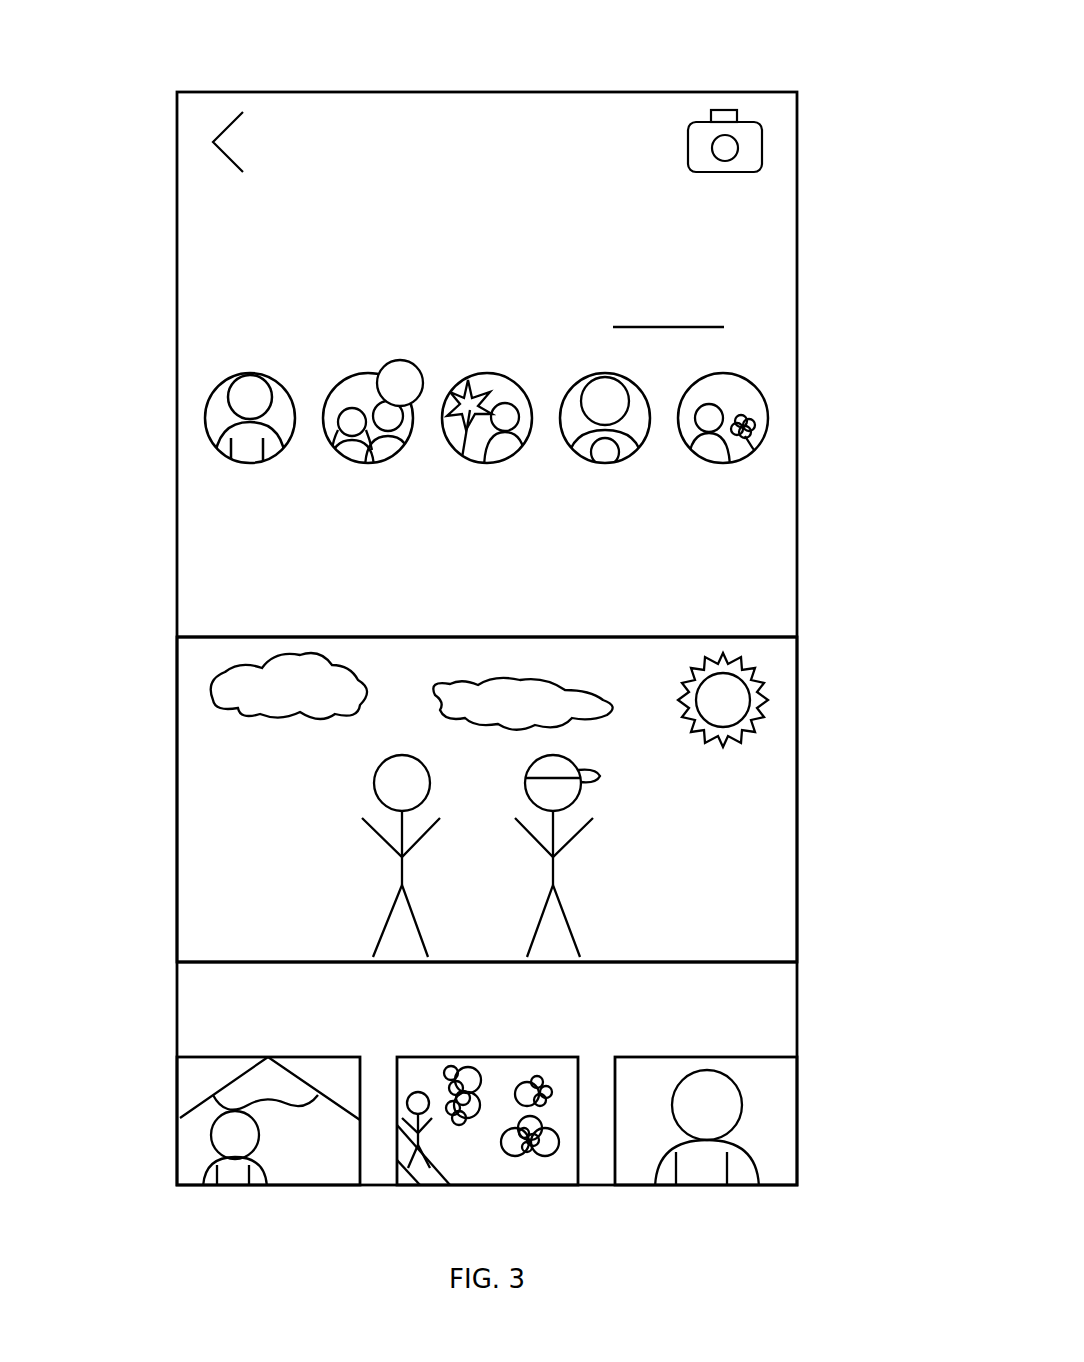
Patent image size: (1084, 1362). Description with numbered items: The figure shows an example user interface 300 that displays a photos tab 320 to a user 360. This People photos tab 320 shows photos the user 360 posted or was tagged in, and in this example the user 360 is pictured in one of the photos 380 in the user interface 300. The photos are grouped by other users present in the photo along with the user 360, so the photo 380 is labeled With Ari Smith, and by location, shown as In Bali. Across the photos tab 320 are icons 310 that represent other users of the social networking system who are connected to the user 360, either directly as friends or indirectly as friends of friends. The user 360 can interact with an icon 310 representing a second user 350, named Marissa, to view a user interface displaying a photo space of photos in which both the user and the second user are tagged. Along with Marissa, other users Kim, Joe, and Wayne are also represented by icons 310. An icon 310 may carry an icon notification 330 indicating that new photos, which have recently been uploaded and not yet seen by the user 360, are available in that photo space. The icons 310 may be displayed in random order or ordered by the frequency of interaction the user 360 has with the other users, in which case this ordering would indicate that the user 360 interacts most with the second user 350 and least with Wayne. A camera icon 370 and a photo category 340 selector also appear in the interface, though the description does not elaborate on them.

The user interface 300 is at (193, 90).
The icon 310 is at (203, 418).
The photos tab 320 is at (272, 192).
The icon notification 330 is at (412, 362).
The photo category 340 is at (687, 272).
The second user 350 is at (358, 502).
The user 360 is at (358, 780).
The camera icon 370 is at (760, 107).
The photo 380 is at (760, 637).